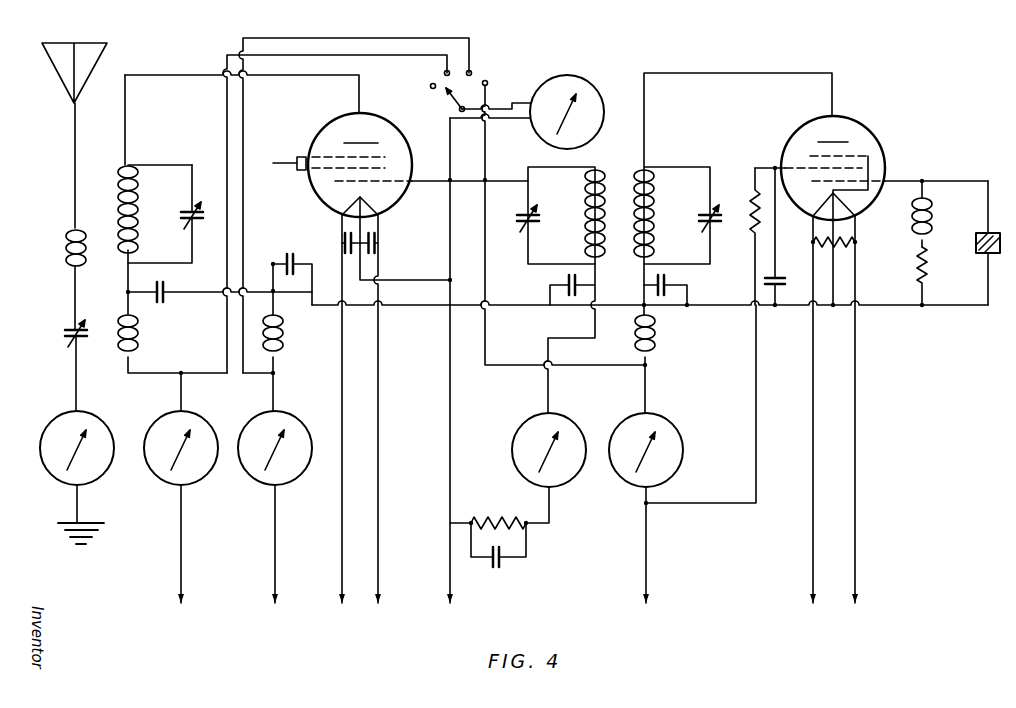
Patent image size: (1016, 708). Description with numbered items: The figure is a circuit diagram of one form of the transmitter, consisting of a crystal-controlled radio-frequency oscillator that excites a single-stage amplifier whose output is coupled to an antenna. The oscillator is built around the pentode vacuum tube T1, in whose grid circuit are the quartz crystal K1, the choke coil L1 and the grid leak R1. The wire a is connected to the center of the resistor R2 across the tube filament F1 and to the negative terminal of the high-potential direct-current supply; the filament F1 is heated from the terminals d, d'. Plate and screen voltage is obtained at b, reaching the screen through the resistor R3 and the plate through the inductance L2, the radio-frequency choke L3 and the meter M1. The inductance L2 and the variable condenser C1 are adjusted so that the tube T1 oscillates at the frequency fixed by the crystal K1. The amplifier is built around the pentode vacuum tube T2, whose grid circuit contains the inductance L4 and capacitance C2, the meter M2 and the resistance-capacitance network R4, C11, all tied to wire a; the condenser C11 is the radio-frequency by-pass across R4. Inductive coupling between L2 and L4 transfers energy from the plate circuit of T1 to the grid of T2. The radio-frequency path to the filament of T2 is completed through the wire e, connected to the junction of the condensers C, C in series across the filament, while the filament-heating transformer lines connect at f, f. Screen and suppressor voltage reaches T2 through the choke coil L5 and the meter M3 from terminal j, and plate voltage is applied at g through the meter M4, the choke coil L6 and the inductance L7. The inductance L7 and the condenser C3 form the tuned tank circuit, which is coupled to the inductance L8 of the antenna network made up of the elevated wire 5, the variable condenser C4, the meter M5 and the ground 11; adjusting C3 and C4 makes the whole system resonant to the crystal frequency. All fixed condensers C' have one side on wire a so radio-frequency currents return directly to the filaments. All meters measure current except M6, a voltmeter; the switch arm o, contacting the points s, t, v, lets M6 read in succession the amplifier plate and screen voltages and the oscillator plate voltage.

The elevated wire 5 is at (66, 44).
The earth or ground 11 is at (84, 522).
The inductance L8 is at (82, 280).
The variable condenser C4 is at (62, 365).
The meter M5 is at (77, 467).
The inductance L7 is at (155, 183).
The condenser C3 is at (165, 214).
The choke coil L6 is at (172, 332).
The meter M4 is at (181, 429).
The choke coil L5 is at (270, 318).
The meter M3 is at (275, 429).
The power supply terminal g is at (181, 558).
The voltage divider terminal j is at (273, 557).
The switch contact point s is at (336, 214).
The switch contact point t is at (355, 205).
The switch arm o is at (448, 100).
The switch contact point v is at (563, 220).
The voltmeter M6 is at (527, 112).
The pentode vacuum tube T2 is at (342, 162).
The condensers C is at (360, 238).
The filament transformer lines f is at (360, 423).
The wire e is at (406, 239).
The wire a is at (650, 375).
The fixed condensers C' is at (535, 289).
The inductance L4 is at (566, 215).
The capacitance C2 is at (517, 216).
The inductance L2 is at (733, 168).
The variable condenser C1 is at (700, 216).
The radio-frequency choke L3 is at (653, 338).
The meter M2 is at (549, 468).
The resistance R4 is at (489, 514).
The condenser C11 is at (498, 552).
The meter M1 is at (682, 405).
The power supply terminal b is at (645, 559).
The pentode vacuum tube T1 is at (820, 158).
The resistor R3 is at (746, 236).
The resistor R2 is at (834, 250).
The tube filament F1 is at (841, 409).
The filament supply terminal d is at (811, 623).
The filament supply terminal d' is at (855, 623).
The choke coil L1 is at (936, 213).
The grid leak R1 is at (933, 277).
The quartz crystal K1 is at (973, 243).